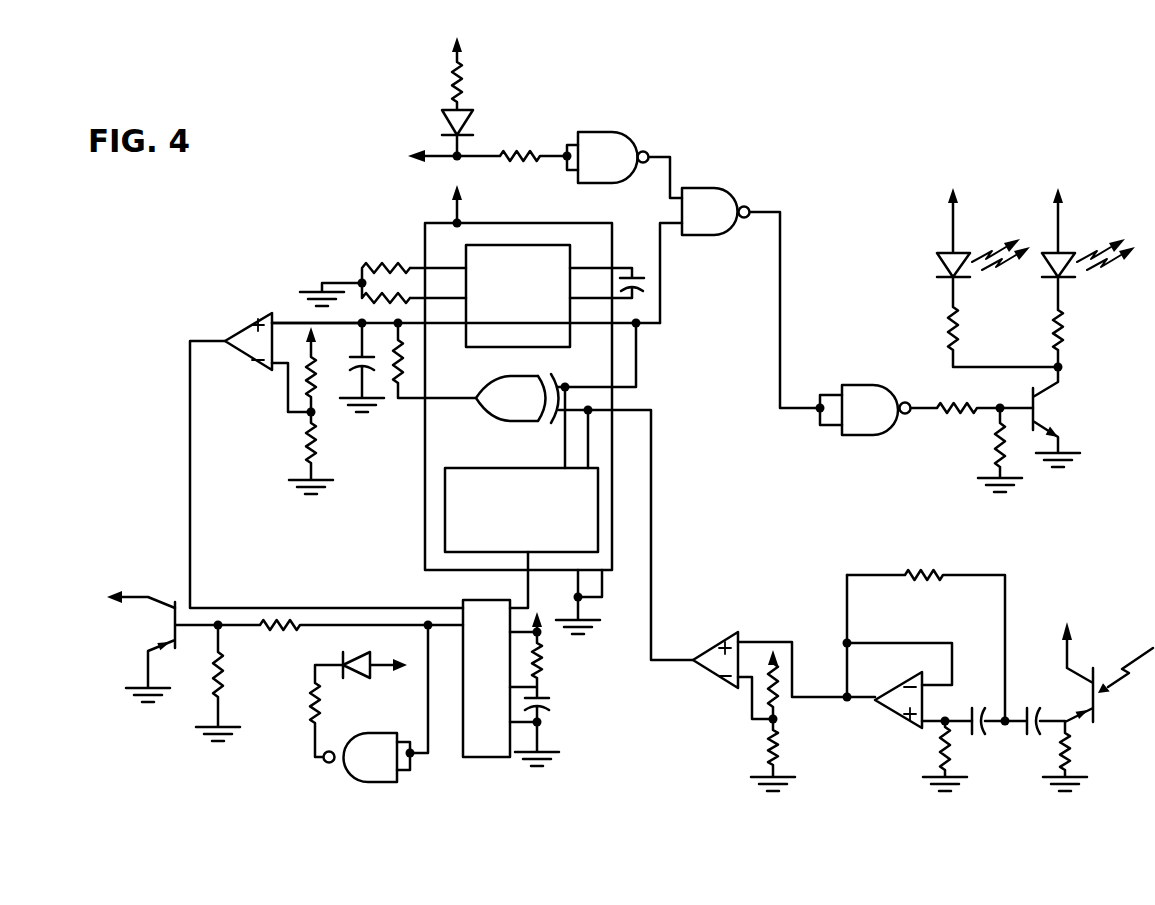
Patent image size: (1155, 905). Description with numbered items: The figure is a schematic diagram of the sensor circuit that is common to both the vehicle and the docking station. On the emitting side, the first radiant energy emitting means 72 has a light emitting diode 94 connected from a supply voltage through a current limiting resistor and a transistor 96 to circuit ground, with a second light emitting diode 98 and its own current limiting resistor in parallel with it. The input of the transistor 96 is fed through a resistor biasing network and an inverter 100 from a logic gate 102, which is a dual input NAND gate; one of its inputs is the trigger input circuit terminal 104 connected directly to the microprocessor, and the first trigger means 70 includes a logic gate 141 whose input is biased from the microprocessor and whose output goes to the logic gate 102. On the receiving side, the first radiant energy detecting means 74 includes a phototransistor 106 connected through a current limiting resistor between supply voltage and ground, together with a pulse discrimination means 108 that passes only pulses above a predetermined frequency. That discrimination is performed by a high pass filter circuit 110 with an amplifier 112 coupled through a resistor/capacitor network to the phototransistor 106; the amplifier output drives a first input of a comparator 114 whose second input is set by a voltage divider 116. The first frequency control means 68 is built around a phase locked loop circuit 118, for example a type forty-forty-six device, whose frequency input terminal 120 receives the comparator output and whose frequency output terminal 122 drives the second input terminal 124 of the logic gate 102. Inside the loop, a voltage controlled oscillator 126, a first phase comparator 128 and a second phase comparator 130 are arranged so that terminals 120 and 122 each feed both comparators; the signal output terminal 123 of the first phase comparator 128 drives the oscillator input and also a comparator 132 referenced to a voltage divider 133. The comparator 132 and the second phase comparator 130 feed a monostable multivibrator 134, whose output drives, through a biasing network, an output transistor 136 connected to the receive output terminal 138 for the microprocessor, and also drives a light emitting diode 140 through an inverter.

The first trigger means 70 is at (495, 118).
The trigger input circuit terminal 104 is at (413, 156).
The logic gate 141 is at (612, 131).
The logic gate 102 is at (705, 203).
The second input terminal 124 is at (674, 234).
The frequency output terminal 122 is at (616, 323).
The frequency input terminal 120 is at (617, 413).
The voltage controlled oscillator 126 is at (516, 349).
The first phase comparator 128 is at (514, 406).
The second phase comparator 130 is at (472, 475).
The phase locked loop circuit 118 is at (425, 530).
The signal output terminal 123 is at (422, 402).
The comparator 132 is at (252, 326).
The voltage divider 133 is at (311, 414).
The receive output terminal 138 is at (137, 593).
The output transistor 136 is at (167, 638).
The light emitting diode 140 is at (358, 679).
The monostable multivibrator 134 is at (473, 759).
The first frequency control means 68 is at (568, 731).
The comparator 114 is at (712, 668).
The voltage divider 116 is at (775, 720).
The amplifier 112 is at (890, 710).
The high pass filter circuit 110 is at (971, 632).
The pulse discrimination means 108 is at (855, 752).
The first radiant energy detecting means 74 is at (969, 759).
The phototransistor 106 is at (1079, 676).
The first radiant energy emitting means 72 is at (860, 240).
The inverter 100 is at (870, 398).
The transistor 96 is at (1042, 418).
The second light emitting diode 98 is at (964, 252).
The light emitting diode 94 is at (1070, 252).